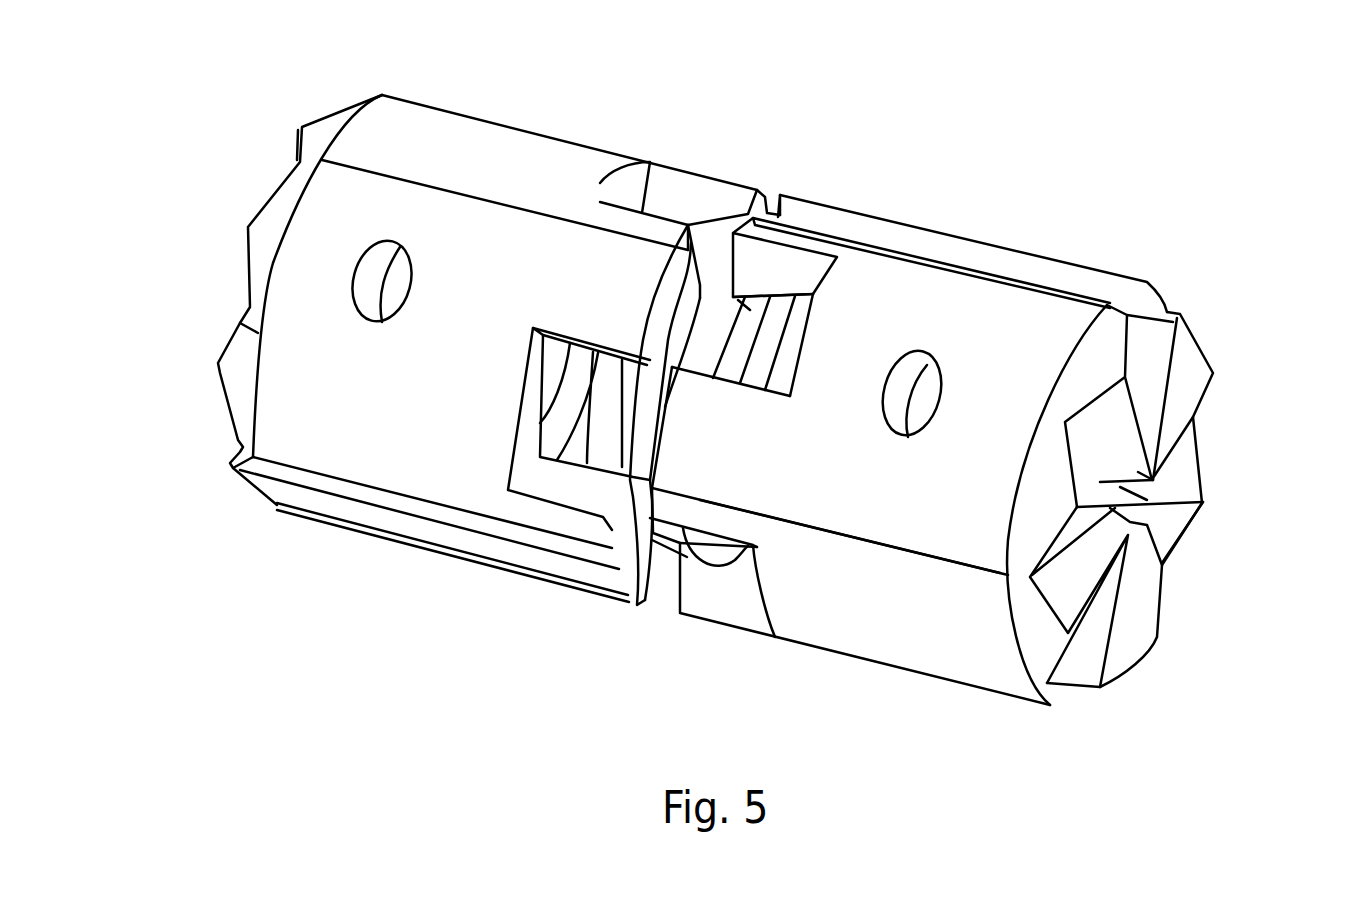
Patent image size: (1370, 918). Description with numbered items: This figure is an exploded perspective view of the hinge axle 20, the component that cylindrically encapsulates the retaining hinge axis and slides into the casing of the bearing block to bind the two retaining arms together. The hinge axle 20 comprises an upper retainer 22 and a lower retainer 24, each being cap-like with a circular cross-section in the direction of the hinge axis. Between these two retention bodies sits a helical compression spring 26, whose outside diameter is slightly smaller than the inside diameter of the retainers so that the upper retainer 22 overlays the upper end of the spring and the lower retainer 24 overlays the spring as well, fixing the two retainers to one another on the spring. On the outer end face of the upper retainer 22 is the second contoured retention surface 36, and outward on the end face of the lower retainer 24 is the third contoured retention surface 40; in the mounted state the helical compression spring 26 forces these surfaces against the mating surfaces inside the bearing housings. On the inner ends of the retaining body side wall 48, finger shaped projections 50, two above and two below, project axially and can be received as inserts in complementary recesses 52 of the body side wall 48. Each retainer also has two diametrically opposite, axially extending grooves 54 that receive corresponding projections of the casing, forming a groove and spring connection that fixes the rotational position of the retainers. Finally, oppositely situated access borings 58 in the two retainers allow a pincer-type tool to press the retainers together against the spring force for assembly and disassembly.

The hinge axle 20 is at (1157, 716).
The upper retainer 22 is at (1015, 718).
The lower retainer 24 is at (324, 555).
The helical compression spring 26 is at (607, 453).
The second contoured retention surface 36 is at (1243, 483).
The third contoured retention surface 40 is at (190, 260).
The retaining body side wall 48 is at (327, 288).
The finger shaped projections 50 is at (614, 306).
The recesses 52 is at (727, 250).
The grooves 54 is at (350, 512).
The access borings 58 is at (400, 267).